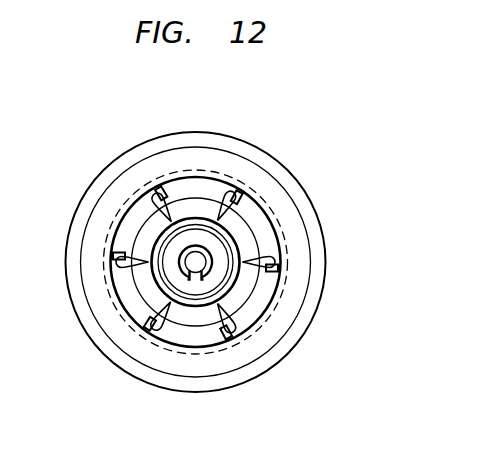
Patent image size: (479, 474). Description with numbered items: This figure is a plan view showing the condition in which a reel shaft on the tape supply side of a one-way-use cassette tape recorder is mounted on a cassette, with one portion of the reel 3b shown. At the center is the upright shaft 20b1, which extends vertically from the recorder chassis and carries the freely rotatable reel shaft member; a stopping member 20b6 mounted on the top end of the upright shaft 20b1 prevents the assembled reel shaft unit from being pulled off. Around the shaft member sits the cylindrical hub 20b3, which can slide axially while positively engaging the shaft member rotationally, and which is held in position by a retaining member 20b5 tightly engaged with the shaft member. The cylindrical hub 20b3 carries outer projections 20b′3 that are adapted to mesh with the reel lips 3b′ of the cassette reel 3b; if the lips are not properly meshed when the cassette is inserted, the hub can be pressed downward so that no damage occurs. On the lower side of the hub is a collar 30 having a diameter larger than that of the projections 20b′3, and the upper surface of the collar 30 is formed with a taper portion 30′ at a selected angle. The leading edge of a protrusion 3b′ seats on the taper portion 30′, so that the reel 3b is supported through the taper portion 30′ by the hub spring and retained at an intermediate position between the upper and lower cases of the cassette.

The upright shaft 20b1 is at (201, 261).
The stopping member 20b6 is at (206, 246).
The retaining member 20b5 is at (194, 237).
The cylindrical hub 20b3 is at (200, 324).
The outer projections 20b′3 is at (157, 334).
The collar 30 is at (131, 198).
The taper portion 30′ is at (121, 222).
The reel 3b is at (305, 278).
The reel lips 3b′ is at (222, 338).